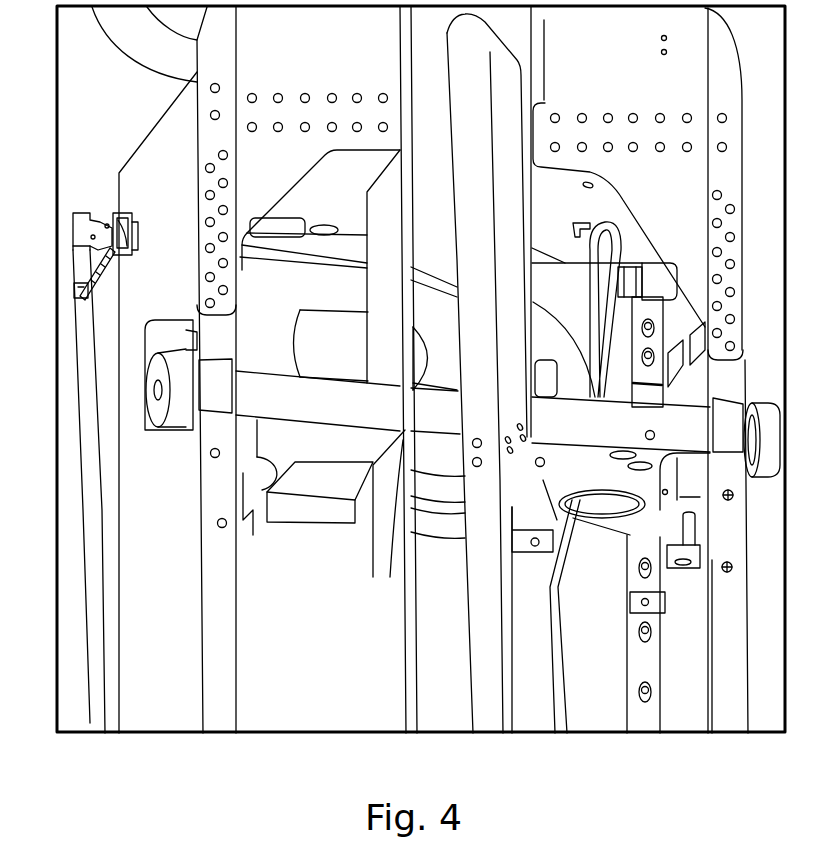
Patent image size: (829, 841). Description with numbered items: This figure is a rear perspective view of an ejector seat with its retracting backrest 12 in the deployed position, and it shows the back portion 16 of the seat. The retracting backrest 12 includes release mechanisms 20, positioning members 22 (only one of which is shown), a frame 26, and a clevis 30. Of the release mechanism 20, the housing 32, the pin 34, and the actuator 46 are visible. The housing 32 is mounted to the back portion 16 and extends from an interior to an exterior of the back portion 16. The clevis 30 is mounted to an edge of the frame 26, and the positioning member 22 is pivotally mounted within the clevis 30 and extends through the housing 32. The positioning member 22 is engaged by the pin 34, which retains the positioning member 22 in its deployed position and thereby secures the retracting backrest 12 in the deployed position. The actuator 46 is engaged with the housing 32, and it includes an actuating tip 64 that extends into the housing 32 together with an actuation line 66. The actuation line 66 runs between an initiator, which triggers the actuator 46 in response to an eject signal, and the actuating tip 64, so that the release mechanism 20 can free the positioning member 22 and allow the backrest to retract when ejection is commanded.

The retracting backrest 12 is at (100, 198).
The back portion 16 is at (173, 176).
The release mechanism 20 is at (140, 253).
The positioning member 22 is at (92, 283).
The frame 26 is at (92, 403).
The clevis 30 is at (78, 290).
The housing 32 is at (122, 215).
The pin 34 is at (92, 237).
The actuator 46 is at (623, 312).
The actuating tip 64 is at (638, 268).
The actuation line 66 is at (602, 322).